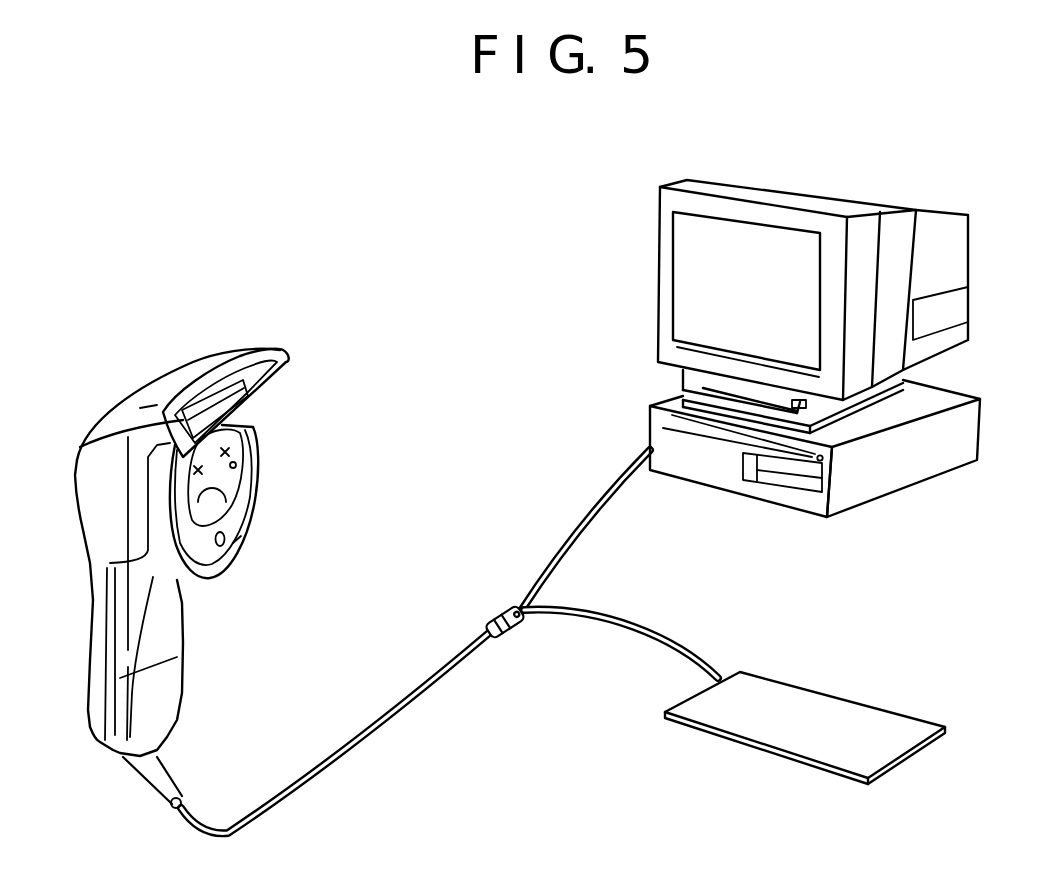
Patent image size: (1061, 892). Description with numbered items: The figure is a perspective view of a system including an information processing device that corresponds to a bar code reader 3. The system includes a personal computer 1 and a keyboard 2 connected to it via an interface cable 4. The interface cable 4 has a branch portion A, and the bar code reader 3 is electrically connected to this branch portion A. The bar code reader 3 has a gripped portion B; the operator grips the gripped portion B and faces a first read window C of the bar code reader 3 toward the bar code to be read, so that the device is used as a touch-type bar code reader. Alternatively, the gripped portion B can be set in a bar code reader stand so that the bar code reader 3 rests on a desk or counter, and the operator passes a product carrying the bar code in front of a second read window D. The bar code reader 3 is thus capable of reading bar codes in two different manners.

The personal computer 1 is at (952, 280).
The keyboard 2 is at (823, 692).
The bar code reader 3 is at (202, 536).
The interface cable 4 is at (635, 622).
The branch portion A is at (510, 640).
The gripped portion B is at (167, 688).
The first read window C is at (225, 397).
The second read window D is at (242, 445).